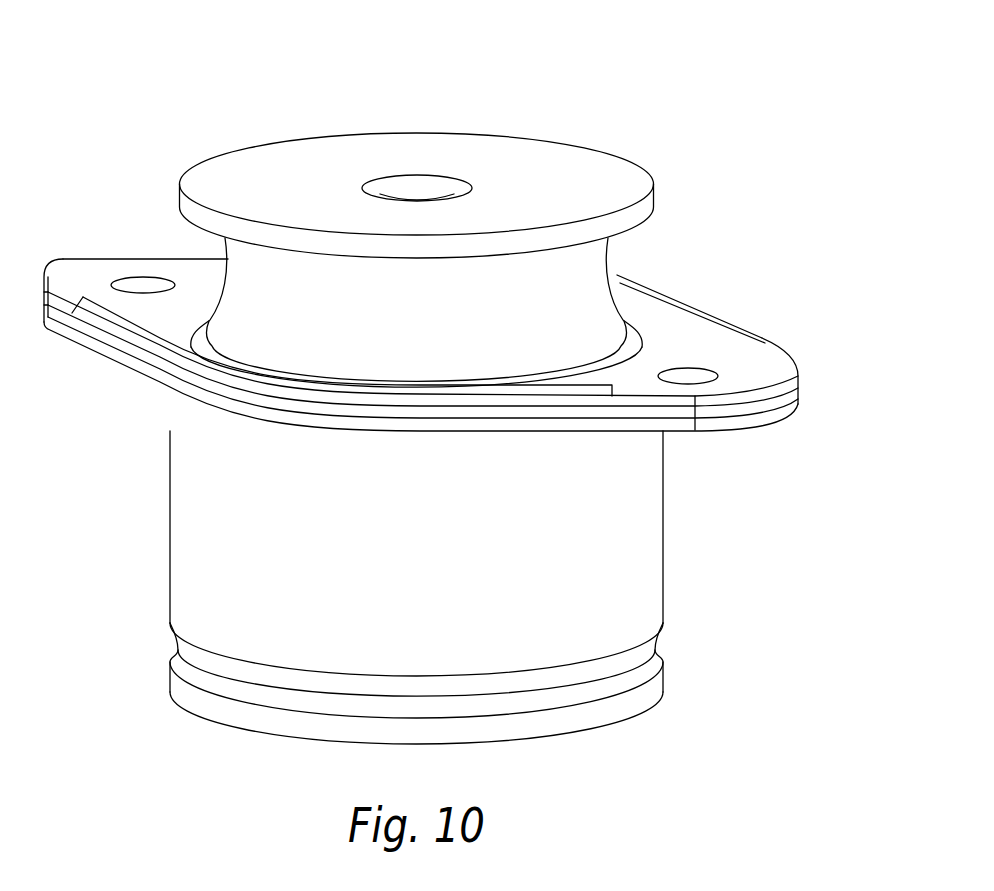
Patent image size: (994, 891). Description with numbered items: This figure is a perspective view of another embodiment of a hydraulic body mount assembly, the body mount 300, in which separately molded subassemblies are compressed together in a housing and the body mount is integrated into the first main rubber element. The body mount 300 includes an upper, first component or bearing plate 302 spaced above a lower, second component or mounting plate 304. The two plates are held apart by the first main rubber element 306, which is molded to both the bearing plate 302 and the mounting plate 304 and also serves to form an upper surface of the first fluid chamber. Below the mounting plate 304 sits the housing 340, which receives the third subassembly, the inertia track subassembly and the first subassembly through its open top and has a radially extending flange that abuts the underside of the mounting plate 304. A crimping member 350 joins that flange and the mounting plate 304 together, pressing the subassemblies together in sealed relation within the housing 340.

The body mount 300 is at (163, 109).
The bearing plate 302 is at (585, 167).
The mounting plate 304 is at (713, 340).
The first main rubber element 306 is at (600, 262).
The housing 340 is at (642, 522).
The crimping member 350 is at (748, 431).